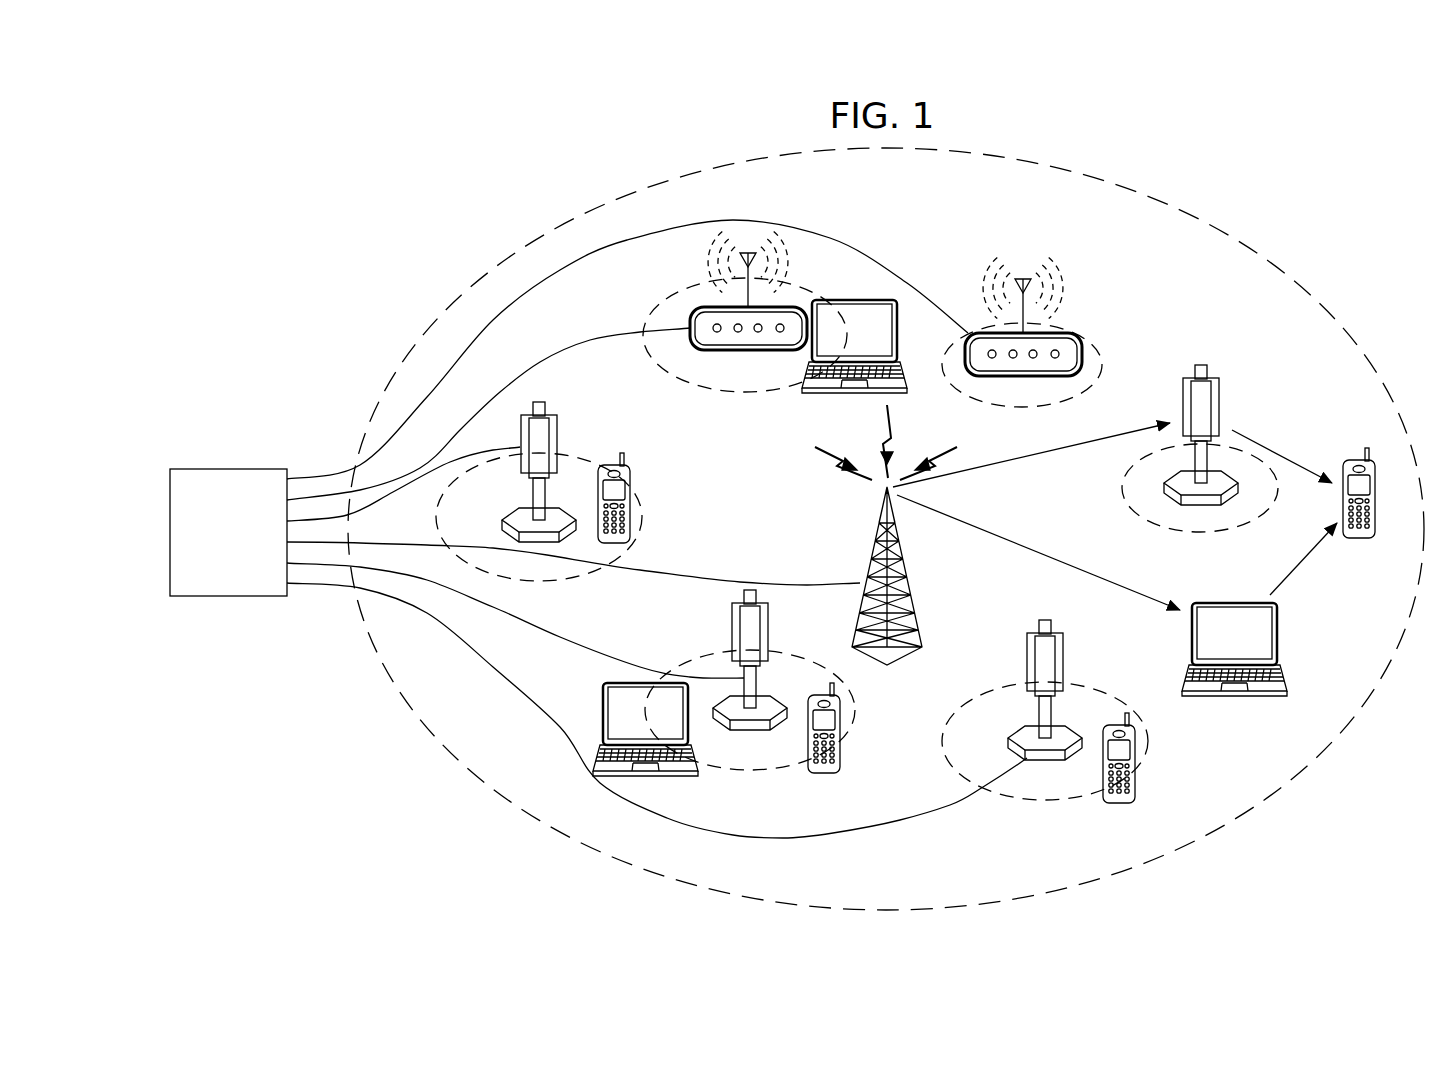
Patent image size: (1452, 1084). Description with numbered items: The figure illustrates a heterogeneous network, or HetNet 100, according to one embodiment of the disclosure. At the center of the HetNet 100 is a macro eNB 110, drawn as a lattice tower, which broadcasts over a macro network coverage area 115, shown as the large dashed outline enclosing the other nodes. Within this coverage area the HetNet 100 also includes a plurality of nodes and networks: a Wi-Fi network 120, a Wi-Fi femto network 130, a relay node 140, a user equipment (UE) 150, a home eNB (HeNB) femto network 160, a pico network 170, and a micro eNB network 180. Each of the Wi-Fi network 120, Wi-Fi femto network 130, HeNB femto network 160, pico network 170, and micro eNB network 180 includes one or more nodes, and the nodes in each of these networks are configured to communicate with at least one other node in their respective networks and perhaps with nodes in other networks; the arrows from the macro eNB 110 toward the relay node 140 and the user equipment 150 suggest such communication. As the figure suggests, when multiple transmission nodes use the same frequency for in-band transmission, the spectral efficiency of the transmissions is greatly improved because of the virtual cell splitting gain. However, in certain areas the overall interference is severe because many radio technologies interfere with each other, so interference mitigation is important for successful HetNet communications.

The heterogeneous network 100 is at (535, 202).
The macro eNB 110 is at (867, 577).
The macro network coverage area 115 is at (1192, 208).
The Wi-Fi network 120 is at (690, 316).
The Wi-Fi femto network 130 is at (1083, 337).
The relay node 140 is at (1219, 410).
The user equipment 150 is at (1278, 636).
The home eNB femto network 160 is at (1027, 660).
The pico network 170 is at (733, 645).
The micro eNB network 180 is at (556, 448).